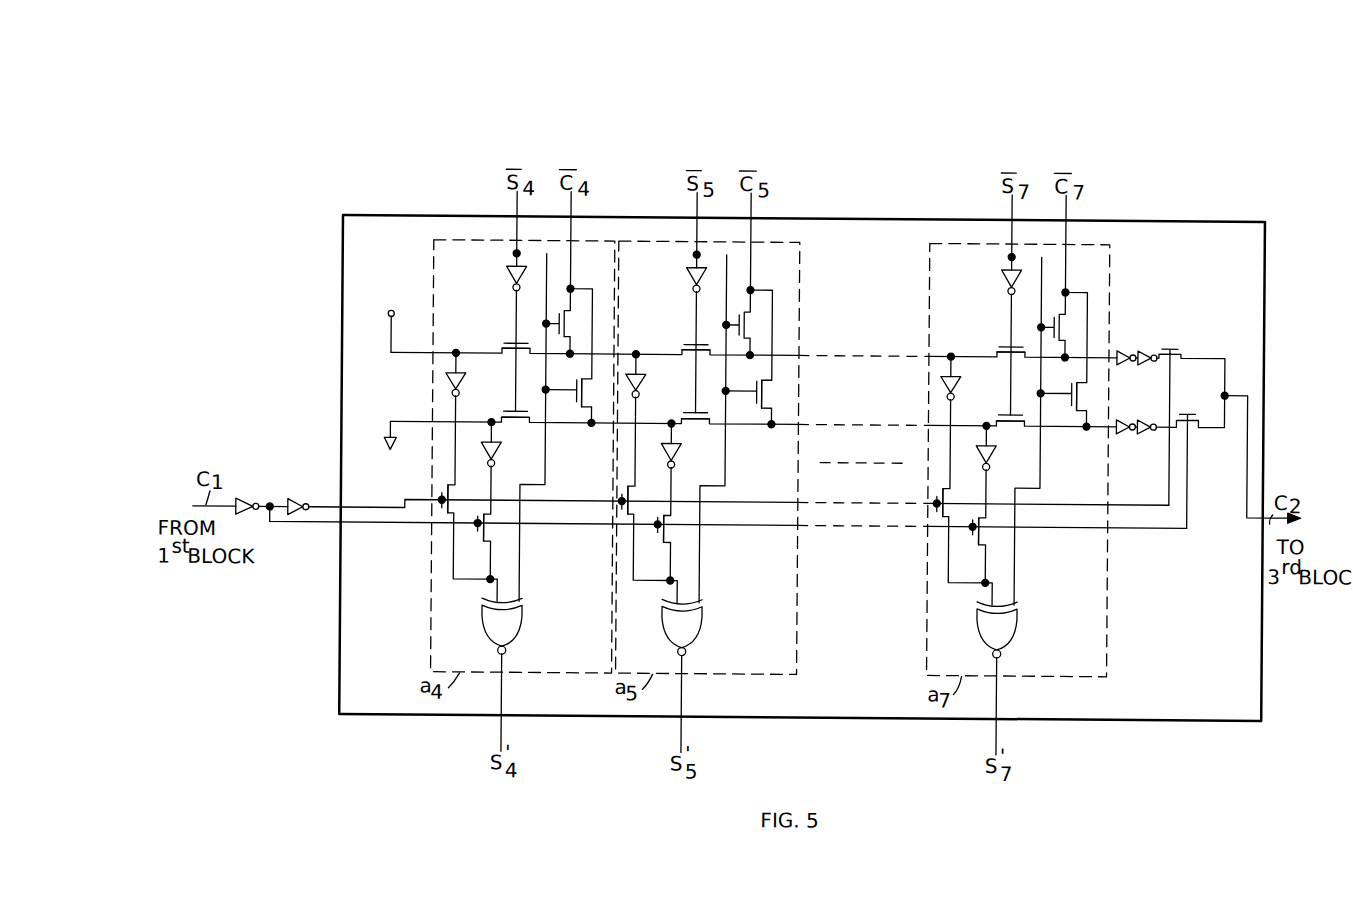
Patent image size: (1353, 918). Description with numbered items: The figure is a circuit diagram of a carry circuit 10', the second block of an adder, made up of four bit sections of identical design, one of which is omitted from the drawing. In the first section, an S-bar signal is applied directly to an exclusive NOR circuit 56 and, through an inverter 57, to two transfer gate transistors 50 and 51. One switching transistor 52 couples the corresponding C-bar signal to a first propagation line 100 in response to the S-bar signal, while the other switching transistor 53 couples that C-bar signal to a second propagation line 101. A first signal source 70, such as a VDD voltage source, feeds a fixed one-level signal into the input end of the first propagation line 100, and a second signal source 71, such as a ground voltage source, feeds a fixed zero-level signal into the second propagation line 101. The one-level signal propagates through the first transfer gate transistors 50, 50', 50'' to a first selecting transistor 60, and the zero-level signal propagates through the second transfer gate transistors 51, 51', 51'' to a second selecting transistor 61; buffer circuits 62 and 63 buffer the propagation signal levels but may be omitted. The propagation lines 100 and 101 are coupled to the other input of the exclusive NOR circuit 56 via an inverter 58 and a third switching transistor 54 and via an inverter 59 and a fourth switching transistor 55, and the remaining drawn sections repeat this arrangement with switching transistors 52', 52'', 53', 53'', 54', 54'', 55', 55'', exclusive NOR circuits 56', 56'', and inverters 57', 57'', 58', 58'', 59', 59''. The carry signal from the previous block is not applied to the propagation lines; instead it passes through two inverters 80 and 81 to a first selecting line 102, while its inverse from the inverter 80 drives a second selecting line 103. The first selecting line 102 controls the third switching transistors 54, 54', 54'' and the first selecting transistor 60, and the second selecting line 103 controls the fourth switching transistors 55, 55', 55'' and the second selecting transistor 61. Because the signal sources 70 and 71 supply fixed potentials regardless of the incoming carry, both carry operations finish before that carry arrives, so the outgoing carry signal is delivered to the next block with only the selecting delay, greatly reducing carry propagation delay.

The carry circuit 10' is at (802, 502).
The first transfer gate transistor 50 is at (497, 332).
The first transfer gate transistor 50' is at (677, 333).
The first transfer gate transistor 50'' is at (992, 336).
The second transfer gate transistor 51 is at (503, 396).
The second transfer gate transistor 51' is at (683, 397).
The second transfer gate transistor 51'' is at (998, 400).
The first switching transistor 52 is at (591, 322).
The first switching transistor 52' is at (774, 323).
The first switching transistor 52'' is at (1091, 325).
The second switching transistor 53 is at (583, 400).
The second switching transistor 53' is at (766, 401).
The second switching transistor 53'' is at (1058, 388).
The third switching transistor 54 is at (463, 492).
The third switching transistor 54' is at (646, 493).
The third switching transistor 54'' is at (918, 495).
The fourth switching transistor 55 is at (468, 541).
The fourth switching transistor 55' is at (648, 542).
The fourth switching transistor 55'' is at (964, 545).
The exclusive NOR circuit 56 is at (521, 626).
The exclusive NOR circuit 56' is at (704, 627).
The exclusive NOR circuit 56'' is at (1021, 630).
The inverter 57 is at (489, 275).
The inverter 57' is at (669, 276).
The inverter 57'' is at (984, 279).
The inverter 58 is at (434, 391).
The inverter 58' is at (614, 393).
The inverter 58'' is at (926, 396).
The inverter 59 is at (506, 455).
The inverter 59' is at (689, 456).
The inverter 59'' is at (1006, 459).
The first selecting transistor 60 is at (1174, 343).
The second selecting transistor 61 is at (1206, 397).
The buffer circuit 62 is at (1128, 346).
The buffer circuit 63 is at (1128, 418).
The first signal source 70 is at (394, 310).
The second signal source 71 is at (390, 450).
The inverter 80 is at (262, 489).
The inverter 81 is at (300, 500).
The first propagation line 100 is at (406, 353).
The second propagation line 101 is at (398, 421).
The first selecting line 102 is at (388, 506).
The second selecting line 103 is at (395, 524).